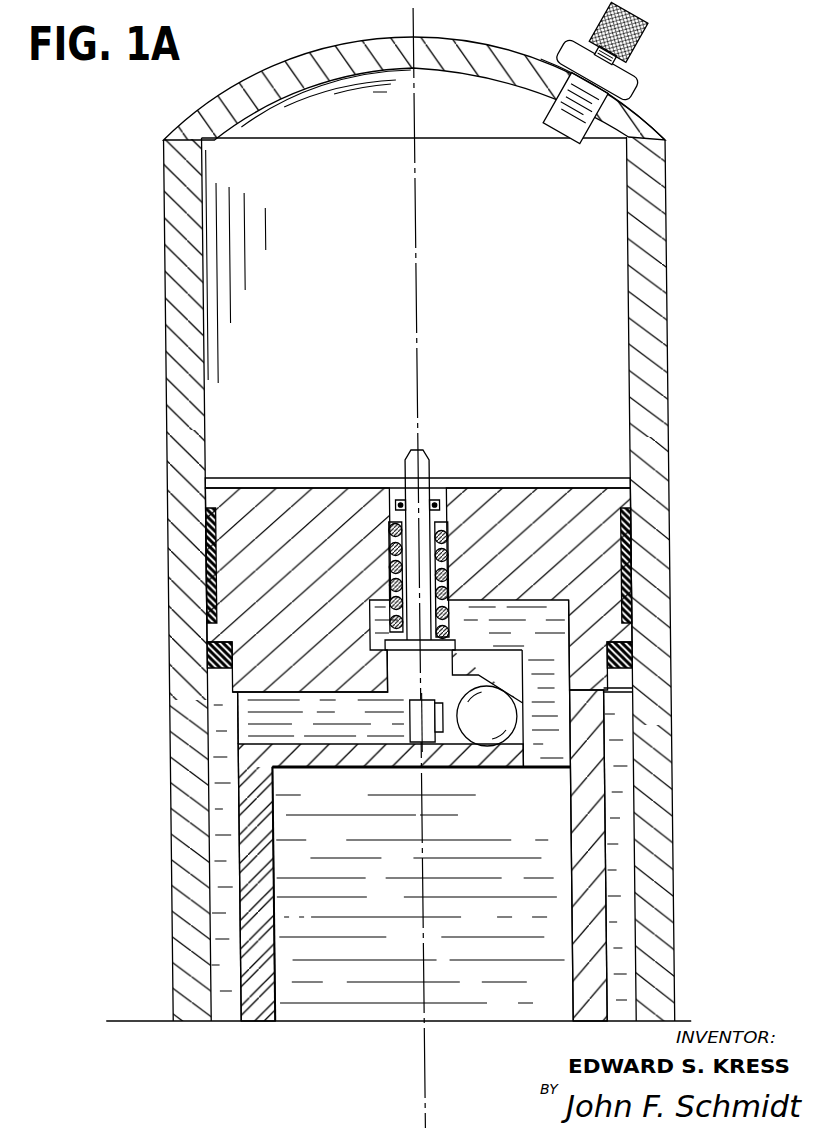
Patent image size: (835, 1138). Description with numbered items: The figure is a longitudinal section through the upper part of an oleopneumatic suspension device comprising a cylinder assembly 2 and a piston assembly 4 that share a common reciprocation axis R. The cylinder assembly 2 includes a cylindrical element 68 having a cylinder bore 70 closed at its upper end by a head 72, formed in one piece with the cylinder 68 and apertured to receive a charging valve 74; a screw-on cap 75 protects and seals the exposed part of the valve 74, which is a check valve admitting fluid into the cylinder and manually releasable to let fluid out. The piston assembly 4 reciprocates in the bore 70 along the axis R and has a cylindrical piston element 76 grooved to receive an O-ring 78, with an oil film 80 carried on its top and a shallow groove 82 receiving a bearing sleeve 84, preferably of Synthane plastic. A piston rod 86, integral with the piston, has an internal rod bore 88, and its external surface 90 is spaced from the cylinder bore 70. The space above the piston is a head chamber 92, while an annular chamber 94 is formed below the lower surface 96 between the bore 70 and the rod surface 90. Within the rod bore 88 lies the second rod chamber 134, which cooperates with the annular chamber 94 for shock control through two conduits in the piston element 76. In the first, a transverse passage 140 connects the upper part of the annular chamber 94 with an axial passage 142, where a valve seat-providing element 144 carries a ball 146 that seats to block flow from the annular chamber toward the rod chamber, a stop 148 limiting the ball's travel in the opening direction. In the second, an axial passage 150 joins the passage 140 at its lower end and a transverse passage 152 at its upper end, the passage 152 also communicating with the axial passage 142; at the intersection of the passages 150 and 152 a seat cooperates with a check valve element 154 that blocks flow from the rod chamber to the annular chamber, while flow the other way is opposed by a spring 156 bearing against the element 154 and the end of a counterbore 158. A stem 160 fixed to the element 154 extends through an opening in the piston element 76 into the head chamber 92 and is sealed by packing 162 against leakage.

The cylinder assembly 2 is at (152, 502).
The piston assembly 4 is at (212, 684).
The cylindrical element 68 is at (655, 755).
The cylinder bore 70 is at (644, 362).
The head 72 is at (232, 98).
The charging valve 74 is at (575, 106).
The screw-on cap 75 is at (637, 44).
The cylindrical piston element 76 is at (242, 577).
The O-ring 78 is at (626, 652).
The oil film 80 is at (303, 479).
The shallow groove 82 is at (626, 578).
The bearing sleeve 84 is at (626, 520).
The piston rod 86 is at (252, 1013).
The rod bore 88 is at (265, 945).
The external surface 90 is at (596, 942).
The head chamber 92 is at (596, 268).
The annular chamber 94 is at (211, 1010).
The lower surface 96 is at (620, 690).
The second rod chamber 134 is at (367, 995).
The transverse passage 140 is at (275, 720).
The axial passage 142 is at (538, 742).
The valve seat-providing element 144 is at (507, 740).
The ball 146 is at (467, 727).
The stop 148 is at (402, 722).
The axial passage 150 is at (381, 662).
The transverse passage 152 is at (490, 602).
The check valve element 154 is at (416, 652).
The spring 156 is at (440, 613).
The counterbore 158 is at (387, 528).
The stem 160 is at (417, 450).
The packing 162 is at (432, 500).
The reciprocation axis R is at (422, 936).